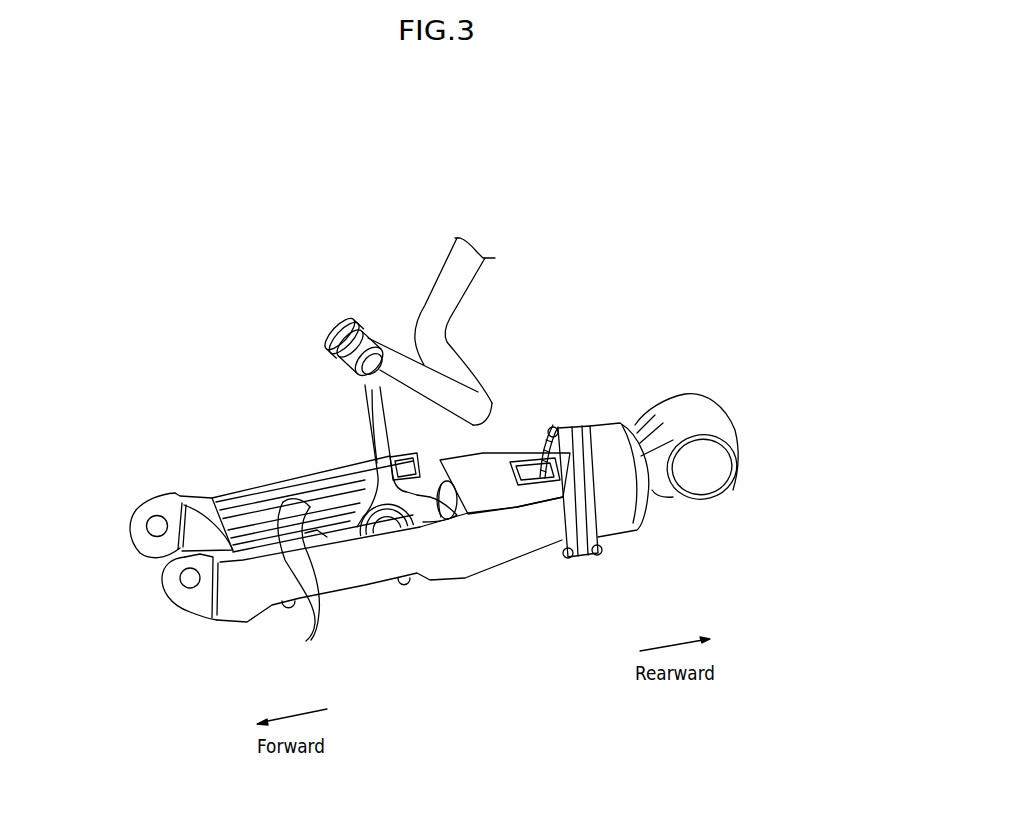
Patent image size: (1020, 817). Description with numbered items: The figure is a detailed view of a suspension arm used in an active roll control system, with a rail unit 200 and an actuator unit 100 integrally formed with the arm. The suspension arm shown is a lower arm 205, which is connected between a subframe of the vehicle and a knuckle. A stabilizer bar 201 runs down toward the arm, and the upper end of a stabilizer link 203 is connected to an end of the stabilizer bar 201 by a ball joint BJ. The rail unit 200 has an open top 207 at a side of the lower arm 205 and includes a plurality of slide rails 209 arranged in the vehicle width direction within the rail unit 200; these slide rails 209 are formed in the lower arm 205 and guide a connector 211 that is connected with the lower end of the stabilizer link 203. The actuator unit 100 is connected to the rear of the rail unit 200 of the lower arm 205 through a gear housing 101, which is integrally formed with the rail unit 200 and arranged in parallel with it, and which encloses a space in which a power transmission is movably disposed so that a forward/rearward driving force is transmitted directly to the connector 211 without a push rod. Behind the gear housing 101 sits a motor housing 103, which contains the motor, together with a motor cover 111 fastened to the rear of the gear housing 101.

The actuator unit 100 is at (646, 481).
The gear housing 101 is at (485, 487).
The motor housing 103 is at (623, 522).
The motor cover 111 is at (587, 537).
The rail unit 200 is at (278, 438).
The stabilizer bar 201 is at (456, 283).
The stabilizer link 203 is at (372, 413).
The lower arm 205 is at (429, 591).
The open top 207 is at (257, 516).
The slide rails 209 is at (302, 587).
The connector 211 is at (440, 507).
The ball joint BJ is at (358, 345).